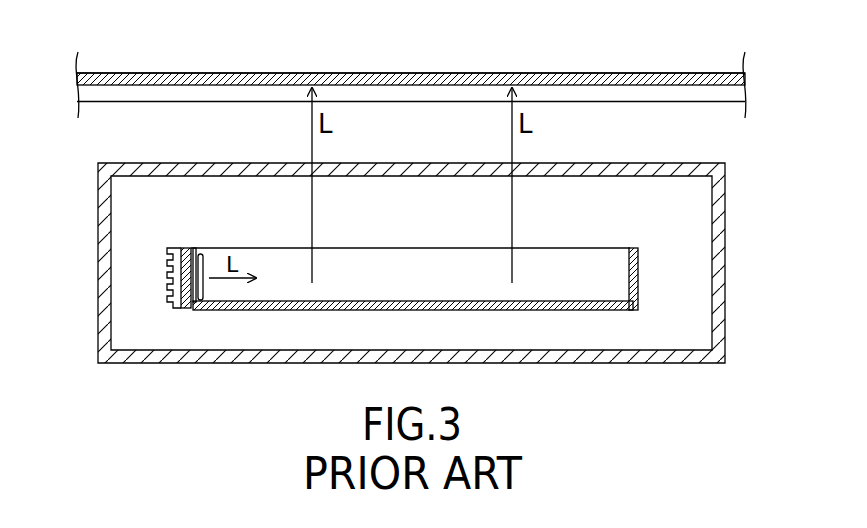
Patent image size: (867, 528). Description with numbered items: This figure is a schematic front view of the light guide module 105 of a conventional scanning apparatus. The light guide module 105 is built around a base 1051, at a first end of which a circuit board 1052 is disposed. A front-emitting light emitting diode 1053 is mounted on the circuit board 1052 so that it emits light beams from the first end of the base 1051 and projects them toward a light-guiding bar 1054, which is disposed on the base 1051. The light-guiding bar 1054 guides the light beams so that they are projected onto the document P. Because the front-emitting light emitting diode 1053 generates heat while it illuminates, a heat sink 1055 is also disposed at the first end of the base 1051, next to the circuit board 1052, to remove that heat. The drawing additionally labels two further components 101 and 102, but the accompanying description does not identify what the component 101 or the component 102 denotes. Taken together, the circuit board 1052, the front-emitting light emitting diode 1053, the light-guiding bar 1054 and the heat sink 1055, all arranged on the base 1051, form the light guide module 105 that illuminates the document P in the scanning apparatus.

The document P is at (210, 72).
The panel 101 is at (600, 93).
The housing 102 is at (716, 226).
The light guide module 105 is at (347, 272).
The base 1051 is at (572, 308).
The circuit board 1052 is at (184, 248).
The front-emitting LED 1053 is at (200, 254).
The light-guiding bar 1054 is at (386, 290).
The heat sink 1055 is at (168, 278).